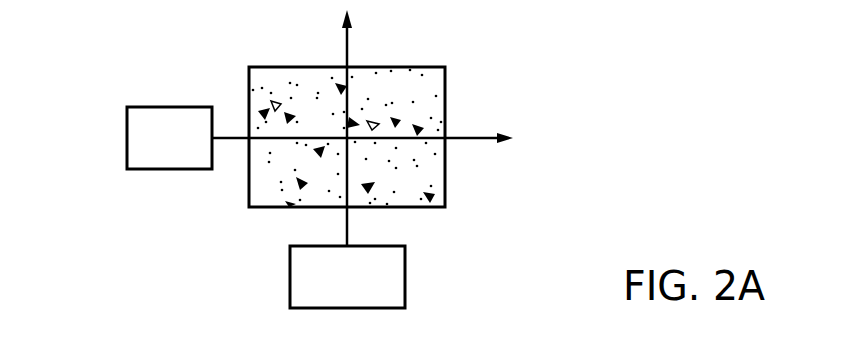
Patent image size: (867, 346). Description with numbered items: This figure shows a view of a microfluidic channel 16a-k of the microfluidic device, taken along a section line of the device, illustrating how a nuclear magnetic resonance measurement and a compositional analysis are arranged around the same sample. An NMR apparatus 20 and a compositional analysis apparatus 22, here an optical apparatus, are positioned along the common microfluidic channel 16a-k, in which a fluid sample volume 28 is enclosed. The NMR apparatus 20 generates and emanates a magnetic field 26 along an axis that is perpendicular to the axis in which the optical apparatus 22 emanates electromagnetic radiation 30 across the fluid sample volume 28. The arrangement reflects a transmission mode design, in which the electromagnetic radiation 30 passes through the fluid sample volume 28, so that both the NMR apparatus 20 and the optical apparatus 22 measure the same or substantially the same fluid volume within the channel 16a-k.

The NMR apparatus 20 is at (165, 107).
The compositional analysis apparatus 22 is at (405, 275).
The microfluidic channel 16a-k is at (445, 90).
The fluid sample volume 28 is at (292, 95).
The magnetic field 26 is at (235, 140).
The electromagnetic radiation 30 is at (347, 222).